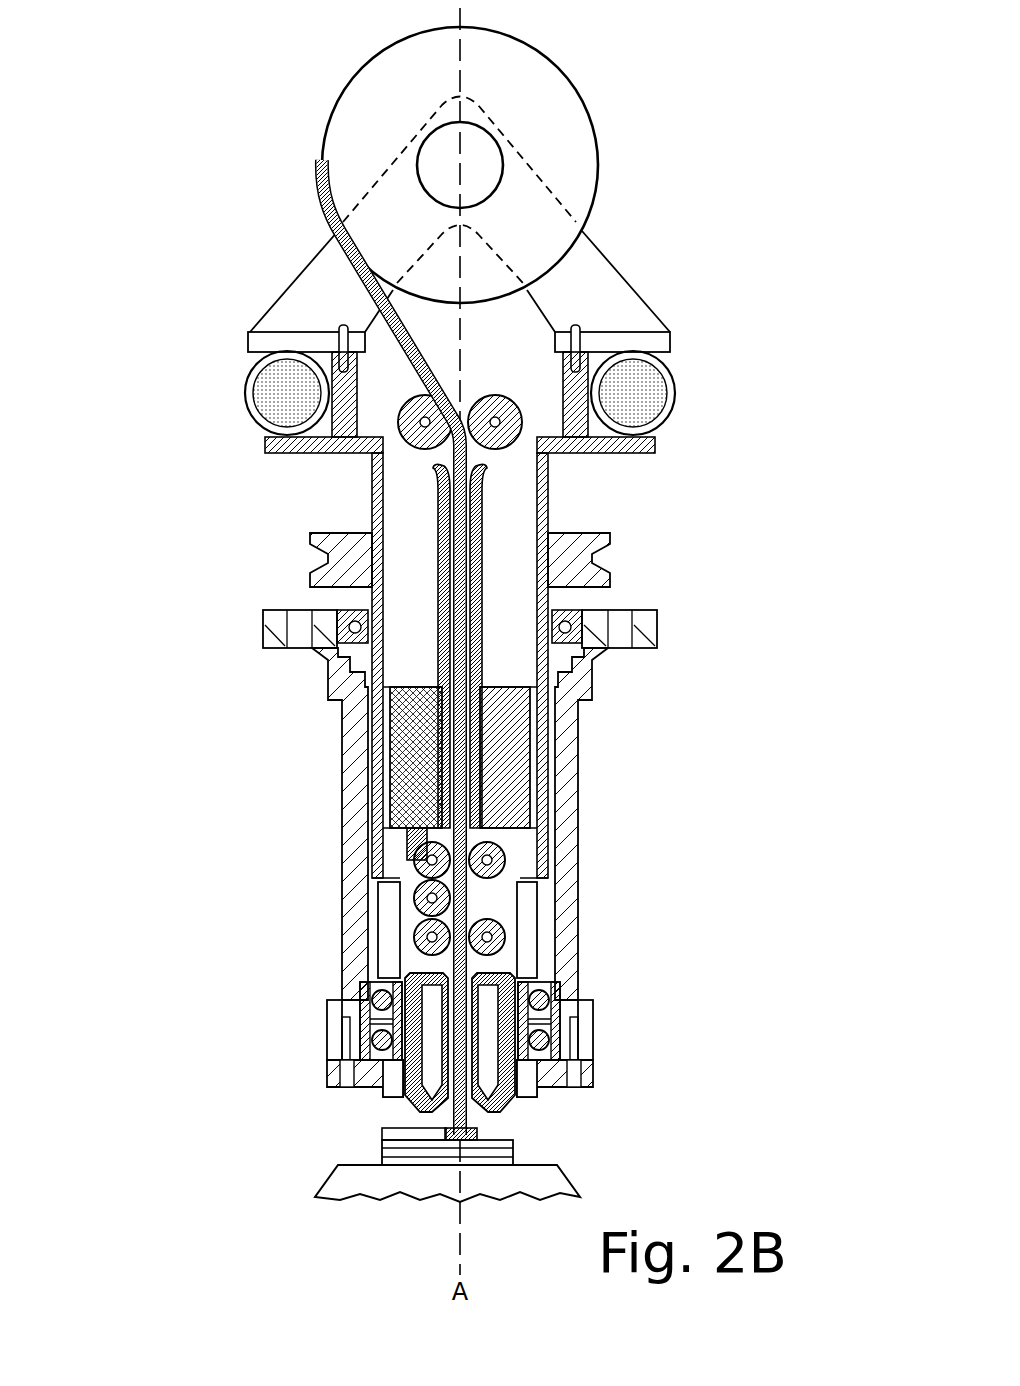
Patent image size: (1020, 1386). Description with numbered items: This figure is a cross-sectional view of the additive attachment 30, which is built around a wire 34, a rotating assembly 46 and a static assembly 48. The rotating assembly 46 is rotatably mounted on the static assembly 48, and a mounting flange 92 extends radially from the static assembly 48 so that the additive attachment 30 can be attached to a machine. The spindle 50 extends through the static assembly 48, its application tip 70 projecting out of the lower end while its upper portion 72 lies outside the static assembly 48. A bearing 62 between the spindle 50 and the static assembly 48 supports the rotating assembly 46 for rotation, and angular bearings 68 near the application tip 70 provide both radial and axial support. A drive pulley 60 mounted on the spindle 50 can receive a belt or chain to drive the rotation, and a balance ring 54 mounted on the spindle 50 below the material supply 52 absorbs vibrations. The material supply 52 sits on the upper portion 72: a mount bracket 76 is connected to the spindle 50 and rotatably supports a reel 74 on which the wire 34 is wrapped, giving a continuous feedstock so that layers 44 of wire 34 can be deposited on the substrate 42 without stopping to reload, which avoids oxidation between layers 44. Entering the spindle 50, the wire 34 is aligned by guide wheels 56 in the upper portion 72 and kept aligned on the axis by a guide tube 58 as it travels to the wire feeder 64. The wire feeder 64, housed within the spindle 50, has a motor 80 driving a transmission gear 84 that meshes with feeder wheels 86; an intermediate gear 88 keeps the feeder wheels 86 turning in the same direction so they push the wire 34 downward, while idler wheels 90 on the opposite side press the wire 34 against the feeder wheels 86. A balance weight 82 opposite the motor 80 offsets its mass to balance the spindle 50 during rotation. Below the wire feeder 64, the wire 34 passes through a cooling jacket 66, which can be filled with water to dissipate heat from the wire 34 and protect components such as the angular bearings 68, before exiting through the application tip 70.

The additive attachment 30 is at (238, 425).
The wire 34 is at (418, 348).
The substrate 42 is at (330, 1178).
The layers 44 is at (383, 1157).
The rotating assembly 46 is at (552, 494).
The static assembly 48 is at (582, 785).
The spindle 50 is at (550, 518).
The material supply 52 is at (602, 167).
The balance ring 54 is at (670, 387).
The guide wheels 56 is at (503, 412).
The guide tube 58 is at (440, 507).
The drive pulley 60 is at (360, 556).
The bearing 62 is at (578, 610).
The wire feeder 64 is at (398, 847).
The cooling jacket 66 is at (490, 988).
The angular bearings 68 is at (563, 1005).
The application tip 70 is at (500, 1105).
The upper portion 72 is at (550, 468).
The reel 74 is at (568, 104).
The mount bracket 76 is at (606, 300).
The motor 80 is at (412, 762).
The balance weight 82 is at (512, 727).
The transmission gear 84 is at (416, 838).
The feeder wheels 86 is at (422, 870).
The intermediate gear 88 is at (426, 898).
The idler wheels 90 is at (510, 924).
The mounting flange 92 is at (263, 628).